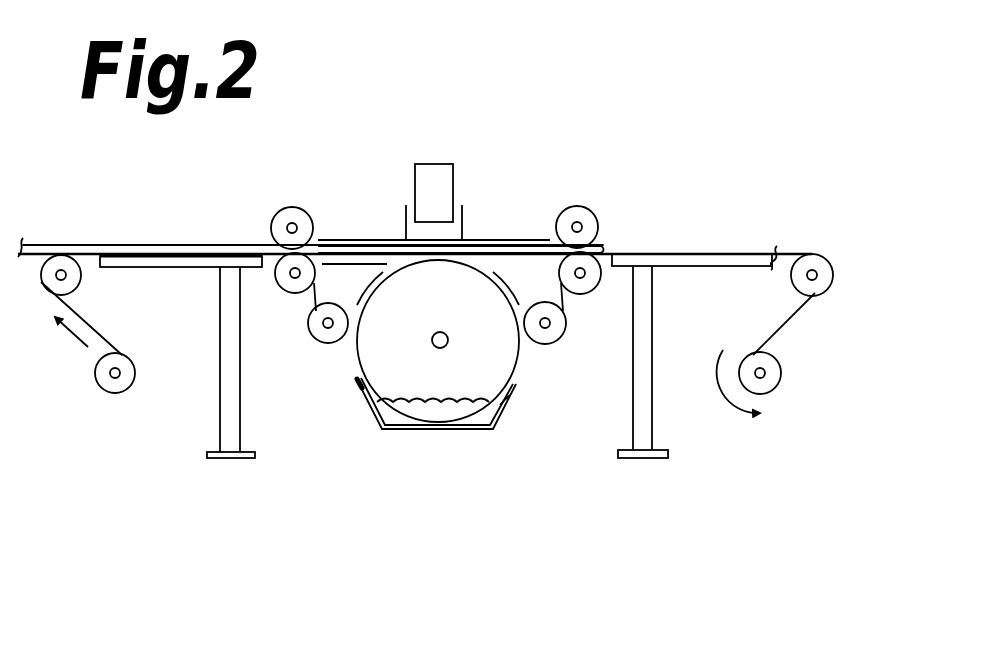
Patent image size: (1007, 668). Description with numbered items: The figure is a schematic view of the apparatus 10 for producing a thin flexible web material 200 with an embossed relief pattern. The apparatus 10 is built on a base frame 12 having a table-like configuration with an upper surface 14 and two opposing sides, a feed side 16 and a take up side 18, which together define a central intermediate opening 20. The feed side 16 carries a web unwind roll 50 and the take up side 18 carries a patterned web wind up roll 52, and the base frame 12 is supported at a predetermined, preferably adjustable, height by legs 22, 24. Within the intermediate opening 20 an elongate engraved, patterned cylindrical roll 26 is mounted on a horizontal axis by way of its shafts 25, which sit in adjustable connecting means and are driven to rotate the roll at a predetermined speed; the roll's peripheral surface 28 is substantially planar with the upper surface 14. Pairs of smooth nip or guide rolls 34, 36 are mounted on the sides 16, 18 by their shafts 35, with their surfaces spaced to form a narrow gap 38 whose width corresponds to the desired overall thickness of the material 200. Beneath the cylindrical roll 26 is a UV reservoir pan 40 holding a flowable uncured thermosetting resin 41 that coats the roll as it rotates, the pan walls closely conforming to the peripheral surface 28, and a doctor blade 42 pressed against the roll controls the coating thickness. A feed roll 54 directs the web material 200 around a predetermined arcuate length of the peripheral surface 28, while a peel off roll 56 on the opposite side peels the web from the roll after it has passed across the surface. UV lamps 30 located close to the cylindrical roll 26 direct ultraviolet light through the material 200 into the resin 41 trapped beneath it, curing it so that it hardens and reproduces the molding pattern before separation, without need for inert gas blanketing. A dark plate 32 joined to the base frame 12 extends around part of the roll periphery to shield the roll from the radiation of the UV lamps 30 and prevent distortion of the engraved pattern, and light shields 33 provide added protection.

The apparatus 10 is at (677, 143).
The base frame 12 is at (660, 425).
The upper surface 14 is at (702, 252).
The feed side 16 is at (143, 268).
The take up side 18 is at (790, 252).
The intermediate opening 20 is at (265, 275).
The leg 22 is at (228, 458).
The leg 24 is at (642, 458).
The shaft 25 is at (447, 336).
The cylindrical roll 26 is at (513, 370).
The peripheral surface 28 is at (357, 353).
The UV lamp 30 is at (415, 180).
The dark plate 32 is at (463, 220).
The light shield 33 is at (353, 264).
The nip roll 34 is at (277, 213).
The shaft 35 is at (766, 370).
The nip roll 36 is at (567, 207).
The narrow gap 38 is at (595, 241).
The UV reservoir pan 40 is at (403, 428).
The resin 41 is at (453, 415).
The doctor blade 42 is at (353, 387).
The web unwind roll 50 is at (95, 373).
The web wind up roll 52 is at (778, 385).
The feed roll 54 is at (317, 342).
The peel off roll 56 is at (552, 343).
The web material 200 is at (78, 313).